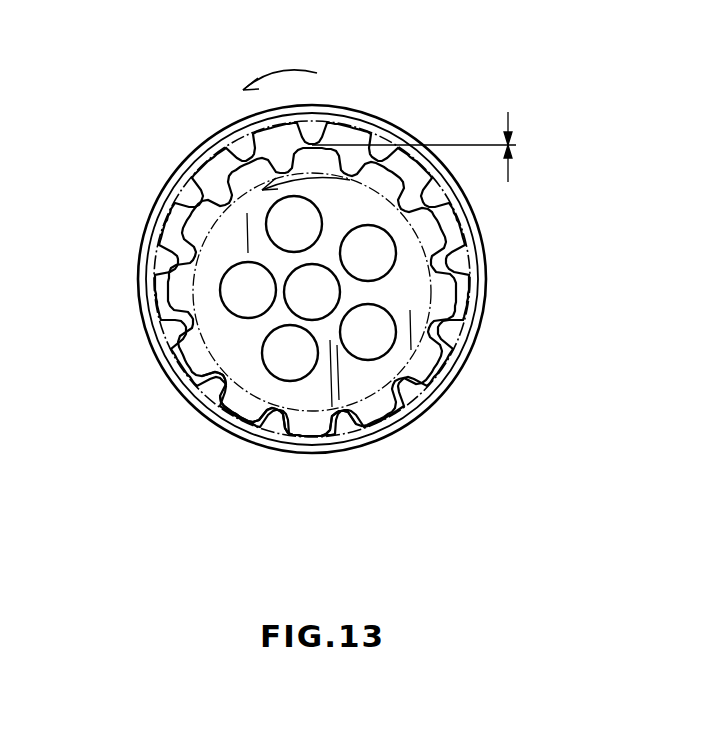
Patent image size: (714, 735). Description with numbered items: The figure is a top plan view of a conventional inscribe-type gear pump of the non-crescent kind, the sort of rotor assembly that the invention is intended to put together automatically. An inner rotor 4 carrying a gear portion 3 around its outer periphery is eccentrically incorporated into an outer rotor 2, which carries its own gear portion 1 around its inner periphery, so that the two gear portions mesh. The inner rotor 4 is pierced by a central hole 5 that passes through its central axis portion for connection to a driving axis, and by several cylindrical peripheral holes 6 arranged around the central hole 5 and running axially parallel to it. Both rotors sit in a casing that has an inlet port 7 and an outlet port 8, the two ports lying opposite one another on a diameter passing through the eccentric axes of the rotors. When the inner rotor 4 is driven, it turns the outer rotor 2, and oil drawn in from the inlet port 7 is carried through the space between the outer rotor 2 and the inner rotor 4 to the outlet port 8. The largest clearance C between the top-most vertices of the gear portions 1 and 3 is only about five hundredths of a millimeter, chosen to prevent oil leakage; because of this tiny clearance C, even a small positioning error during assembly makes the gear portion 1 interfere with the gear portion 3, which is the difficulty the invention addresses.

The gear portion 1 is at (376, 140).
The outer rotor 2 is at (236, 140).
The gear portion 3 is at (322, 424).
The inner rotor 4 is at (352, 383).
The central hole 5 is at (325, 296).
The peripheral holes 6 is at (378, 347).
The inlet port 7 is at (468, 235).
The outlet port 8 is at (150, 273).
The clearance C is at (426, 147).